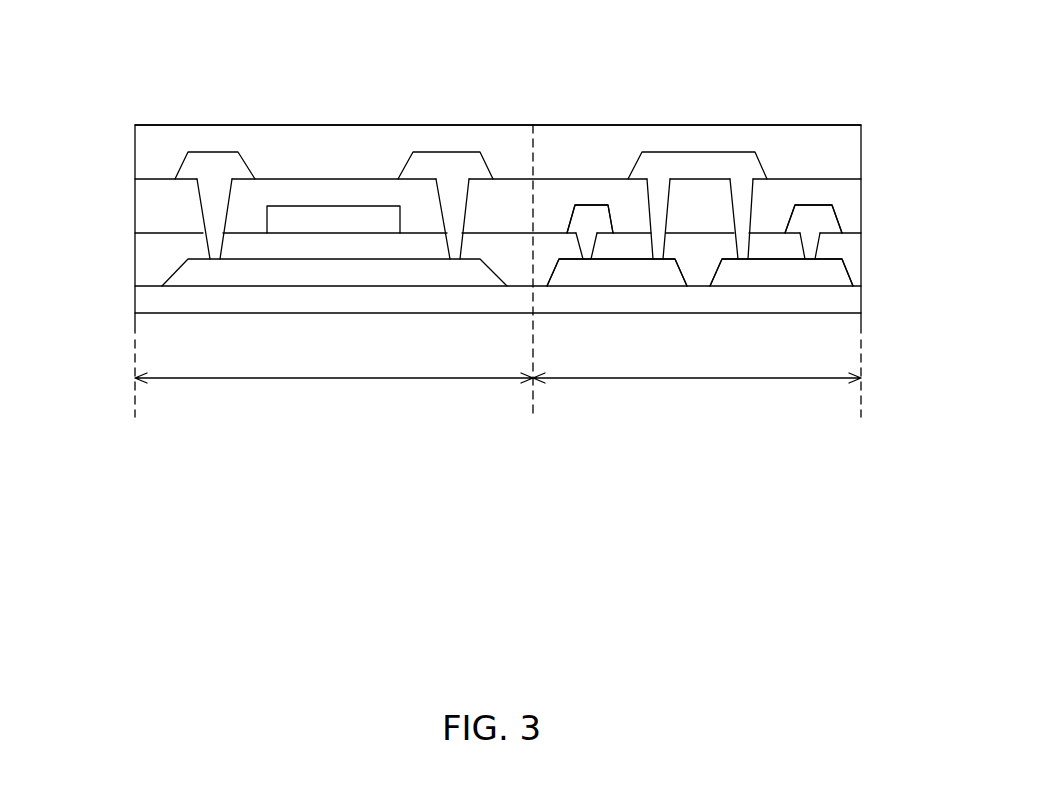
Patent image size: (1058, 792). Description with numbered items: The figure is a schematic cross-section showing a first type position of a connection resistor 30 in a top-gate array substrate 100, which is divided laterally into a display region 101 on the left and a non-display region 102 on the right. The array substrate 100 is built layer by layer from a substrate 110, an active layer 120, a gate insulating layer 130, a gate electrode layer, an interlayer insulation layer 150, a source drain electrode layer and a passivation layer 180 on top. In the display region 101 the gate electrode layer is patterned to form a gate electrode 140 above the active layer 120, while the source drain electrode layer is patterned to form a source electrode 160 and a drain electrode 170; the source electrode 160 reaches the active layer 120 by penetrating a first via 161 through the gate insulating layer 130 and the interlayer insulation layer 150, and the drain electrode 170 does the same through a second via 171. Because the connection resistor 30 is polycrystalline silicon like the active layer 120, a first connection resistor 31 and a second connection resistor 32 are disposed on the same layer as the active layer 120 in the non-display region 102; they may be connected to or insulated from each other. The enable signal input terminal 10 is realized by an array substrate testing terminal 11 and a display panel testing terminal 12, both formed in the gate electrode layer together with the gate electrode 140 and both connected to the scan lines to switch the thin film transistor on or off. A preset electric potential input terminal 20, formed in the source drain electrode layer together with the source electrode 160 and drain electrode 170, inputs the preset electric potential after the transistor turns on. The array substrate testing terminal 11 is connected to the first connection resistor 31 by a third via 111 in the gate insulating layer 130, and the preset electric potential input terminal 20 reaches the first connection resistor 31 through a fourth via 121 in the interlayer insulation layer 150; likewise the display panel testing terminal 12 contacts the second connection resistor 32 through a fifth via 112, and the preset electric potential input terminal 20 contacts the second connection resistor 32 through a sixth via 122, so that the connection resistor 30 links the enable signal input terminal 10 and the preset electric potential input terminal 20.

The array substrate 100 is at (77, 19).
The display region 101 is at (334, 389).
The non-display region 102 is at (697, 389).
The substrate 110 is at (843, 298).
The active layer 120 is at (185, 277).
The gate insulating layer 130 is at (843, 247).
The gate electrode 140 is at (287, 218).
The interlayer insulation layer 150 is at (843, 195).
The source electrode 160 is at (205, 168).
The first via 161 is at (217, 243).
The drain electrode 170 is at (453, 165).
The second via 171 is at (456, 243).
The passivation layer 180 is at (843, 152).
The enable signal input terminal 10 is at (512, 522).
The array substrate testing terminal 11 is at (595, 218).
The display panel testing terminal 12 is at (805, 218).
The third via 111 is at (585, 243).
The fifth via 112 is at (812, 243).
The preset electric potential input terminal 20 is at (727, 165).
The fourth via 121 is at (659, 243).
The sixth via 122 is at (742, 243).
The connection resistor 30 is at (639, 522).
The first connection resistor 31 is at (628, 269).
The second connection resistor 32 is at (775, 273).